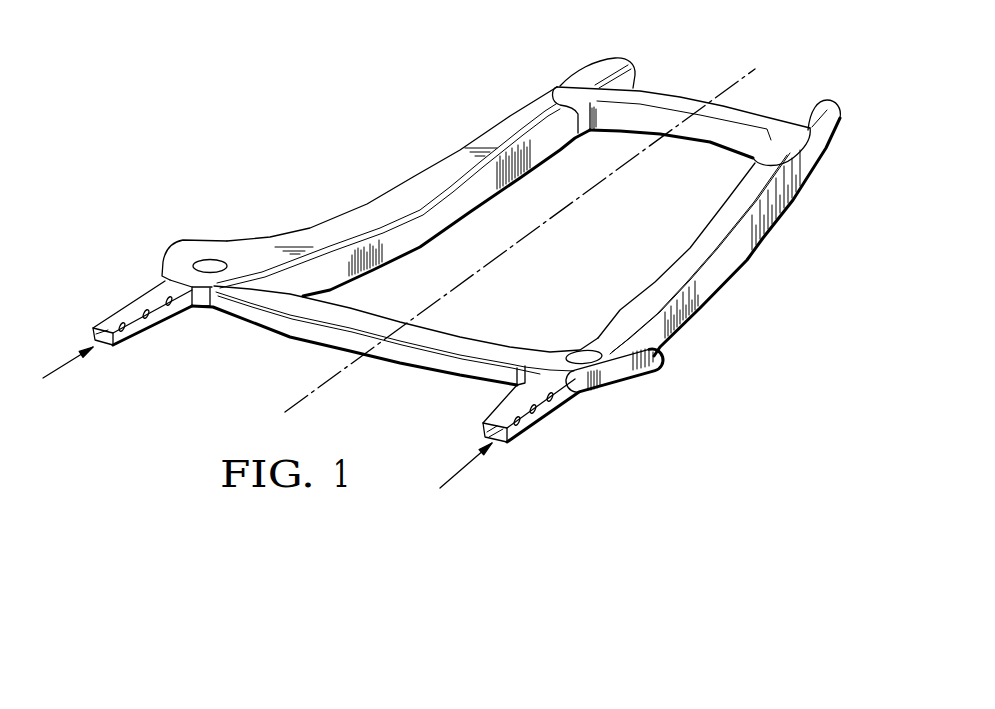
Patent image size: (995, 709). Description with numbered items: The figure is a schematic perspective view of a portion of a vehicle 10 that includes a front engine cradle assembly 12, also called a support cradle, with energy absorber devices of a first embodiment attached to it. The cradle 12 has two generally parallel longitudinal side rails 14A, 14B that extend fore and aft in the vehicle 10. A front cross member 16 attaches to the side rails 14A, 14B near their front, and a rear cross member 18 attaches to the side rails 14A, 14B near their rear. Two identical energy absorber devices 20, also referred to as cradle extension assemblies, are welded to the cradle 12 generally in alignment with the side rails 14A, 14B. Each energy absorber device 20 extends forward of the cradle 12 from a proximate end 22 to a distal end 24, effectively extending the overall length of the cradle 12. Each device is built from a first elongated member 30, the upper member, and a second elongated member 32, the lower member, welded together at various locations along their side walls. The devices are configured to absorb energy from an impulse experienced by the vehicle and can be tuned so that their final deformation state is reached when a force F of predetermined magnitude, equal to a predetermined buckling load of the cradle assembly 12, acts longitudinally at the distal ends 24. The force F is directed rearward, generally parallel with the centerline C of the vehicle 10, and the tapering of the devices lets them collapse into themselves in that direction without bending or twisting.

The vehicle 10 is at (365, 99).
The front engine cradle assembly 12 is at (830, 205).
The longitudinal side rail 14A is at (733, 255).
The longitudinal side rail 14B is at (372, 222).
The front cross member 16 is at (387, 320).
The rear cross member 18 is at (697, 97).
The energy absorber device 20 is at (157, 297).
The proximate end 22 is at (167, 275).
The distal end 24 is at (107, 345).
The first elongated member 30 is at (127, 313).
The second elongated member 32 is at (140, 333).
The centerline C is at (552, 221).
The force F is at (60, 370).